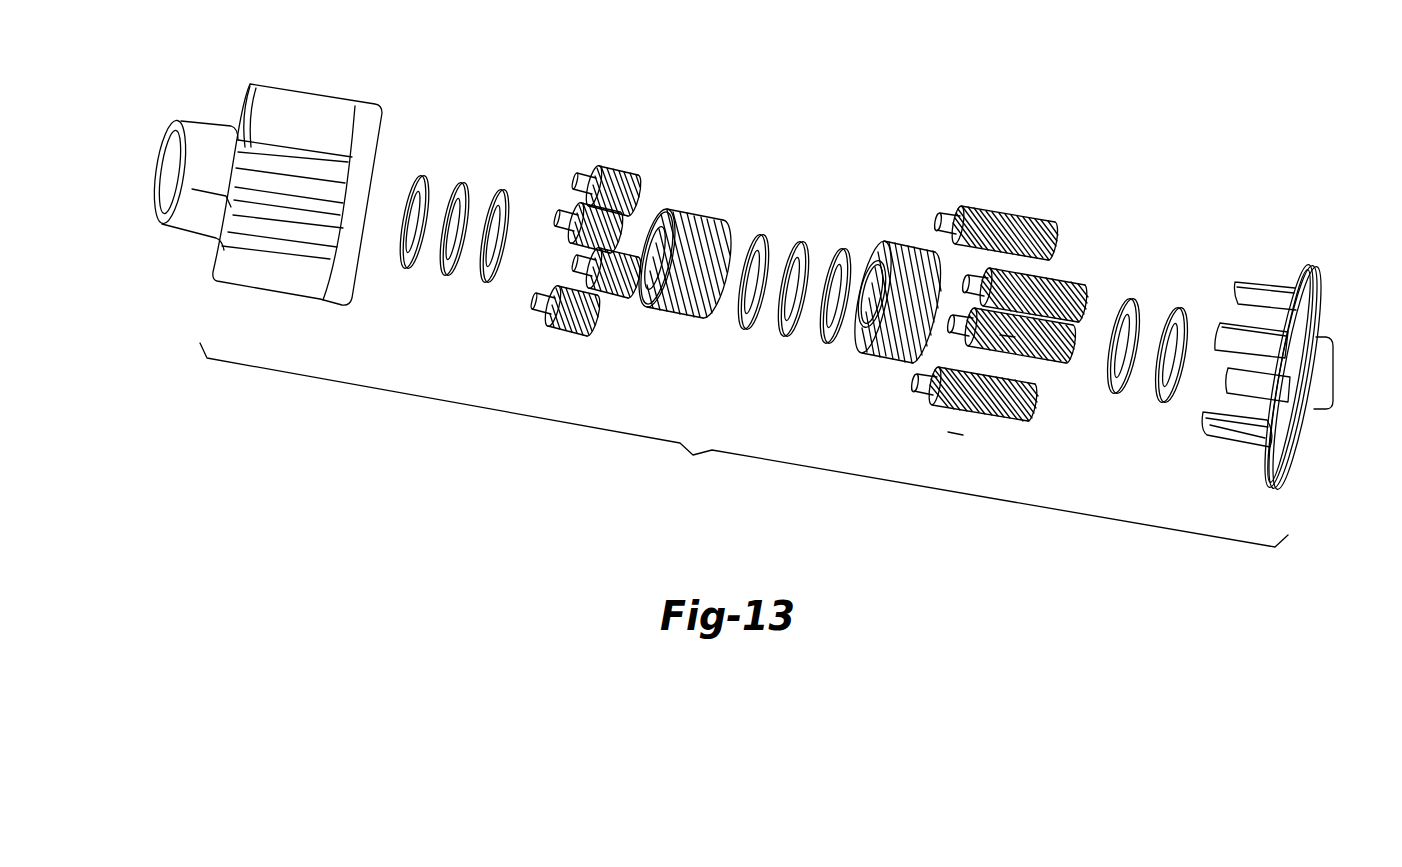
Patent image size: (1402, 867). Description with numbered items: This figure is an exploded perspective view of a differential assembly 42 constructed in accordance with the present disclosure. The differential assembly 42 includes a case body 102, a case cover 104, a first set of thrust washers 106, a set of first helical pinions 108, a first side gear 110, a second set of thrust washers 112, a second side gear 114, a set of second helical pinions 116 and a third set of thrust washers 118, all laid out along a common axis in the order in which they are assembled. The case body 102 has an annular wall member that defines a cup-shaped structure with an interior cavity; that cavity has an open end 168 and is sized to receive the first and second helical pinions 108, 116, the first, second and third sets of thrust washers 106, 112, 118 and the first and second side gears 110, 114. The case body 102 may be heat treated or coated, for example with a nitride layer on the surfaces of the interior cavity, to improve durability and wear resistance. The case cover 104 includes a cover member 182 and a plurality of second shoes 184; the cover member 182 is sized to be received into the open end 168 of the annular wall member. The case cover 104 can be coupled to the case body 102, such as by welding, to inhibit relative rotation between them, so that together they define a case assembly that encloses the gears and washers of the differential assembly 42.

The case body 102 is at (305, 168).
The open end 168 is at (385, 140).
The first set of thrust washers 106 is at (505, 302).
The first helical pinions 108 is at (605, 162).
The first side gear 110 is at (680, 200).
The second set of thrust washers 112 is at (841, 362).
The second side gear 114 is at (900, 240).
The second helical pinions 116 is at (1005, 205).
The third set of thrust washers 118 is at (1182, 422).
The case cover 104 is at (1296, 317).
The cover member 182 is at (1318, 283).
The second shoes 184 is at (1250, 290).
The differential assembly 42 is at (744, 445).